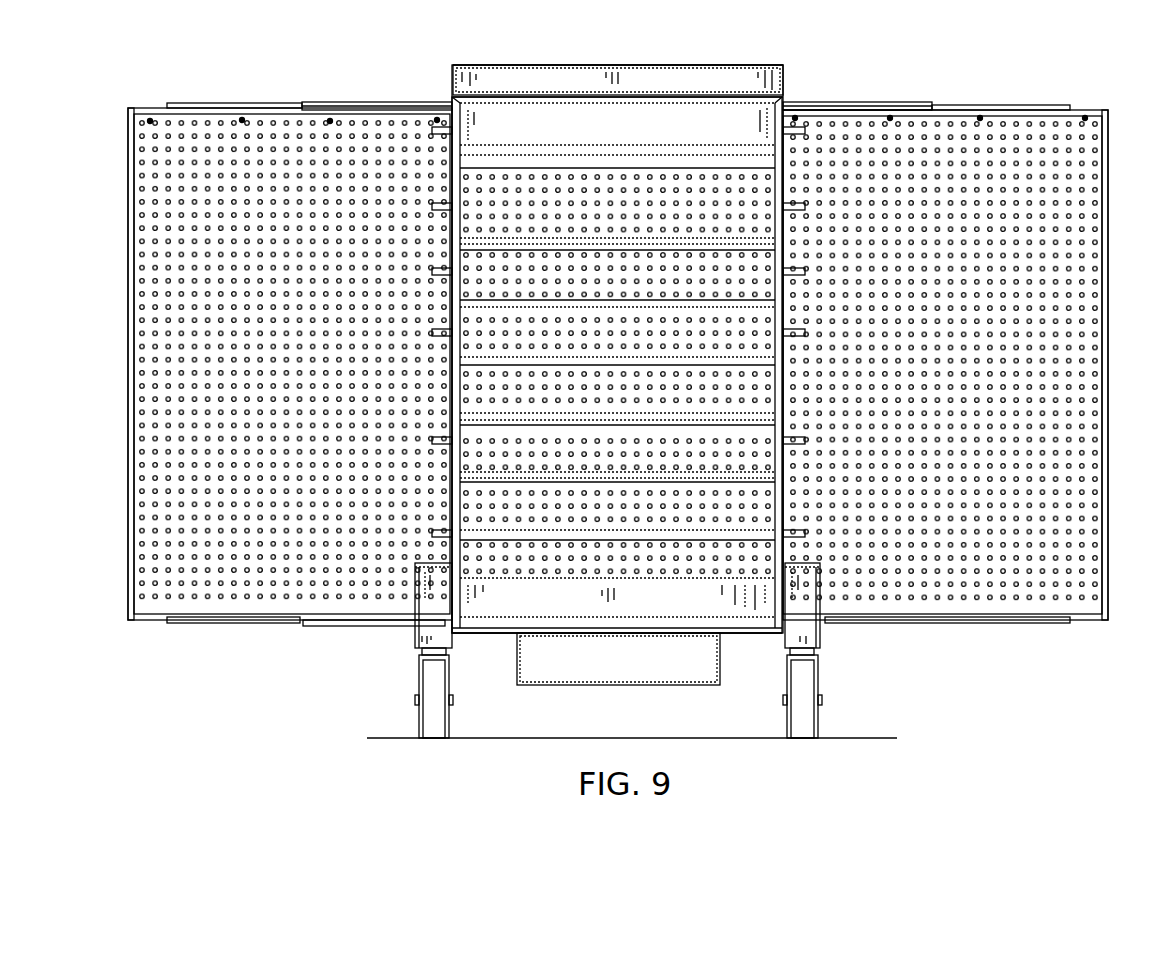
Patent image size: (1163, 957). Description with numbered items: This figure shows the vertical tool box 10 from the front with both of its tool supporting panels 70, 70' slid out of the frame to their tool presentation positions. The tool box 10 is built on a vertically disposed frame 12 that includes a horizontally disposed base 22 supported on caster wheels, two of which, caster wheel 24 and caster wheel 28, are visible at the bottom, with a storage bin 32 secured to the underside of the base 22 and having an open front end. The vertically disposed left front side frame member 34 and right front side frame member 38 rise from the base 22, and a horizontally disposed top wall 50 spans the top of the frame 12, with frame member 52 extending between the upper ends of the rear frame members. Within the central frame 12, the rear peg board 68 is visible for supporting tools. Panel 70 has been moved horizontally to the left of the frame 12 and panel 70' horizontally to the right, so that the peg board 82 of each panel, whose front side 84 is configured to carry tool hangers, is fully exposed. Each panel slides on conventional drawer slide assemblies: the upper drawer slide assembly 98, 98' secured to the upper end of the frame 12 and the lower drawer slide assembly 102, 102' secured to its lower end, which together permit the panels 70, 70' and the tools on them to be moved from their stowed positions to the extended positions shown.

The vertical tool box 10 is at (566, 42).
The frame 12 is at (440, 88).
The base 22 is at (482, 634).
The caster wheel 24 is at (420, 700).
The caster wheel 28 is at (808, 722).
The storage bin 32 is at (635, 672).
The left front side frame member 34 is at (496, 108).
The right front side frame member 38 is at (905, 108).
The top wall 50 is at (620, 97).
The frame member 52 is at (700, 68).
The peg board 68 is at (715, 190).
The tool supporting panel 70 is at (234, 63).
The tool supporting panel 70' is at (1001, 82).
The peg board 82 is at (168, 397).
The front side 84 is at (213, 560).
The drawer slide assembly 98 is at (377, 71).
The drawer slide assembly 98' is at (857, 74).
The drawer slide assembly 102 is at (306, 661).
The drawer slide assembly 102' is at (947, 649).